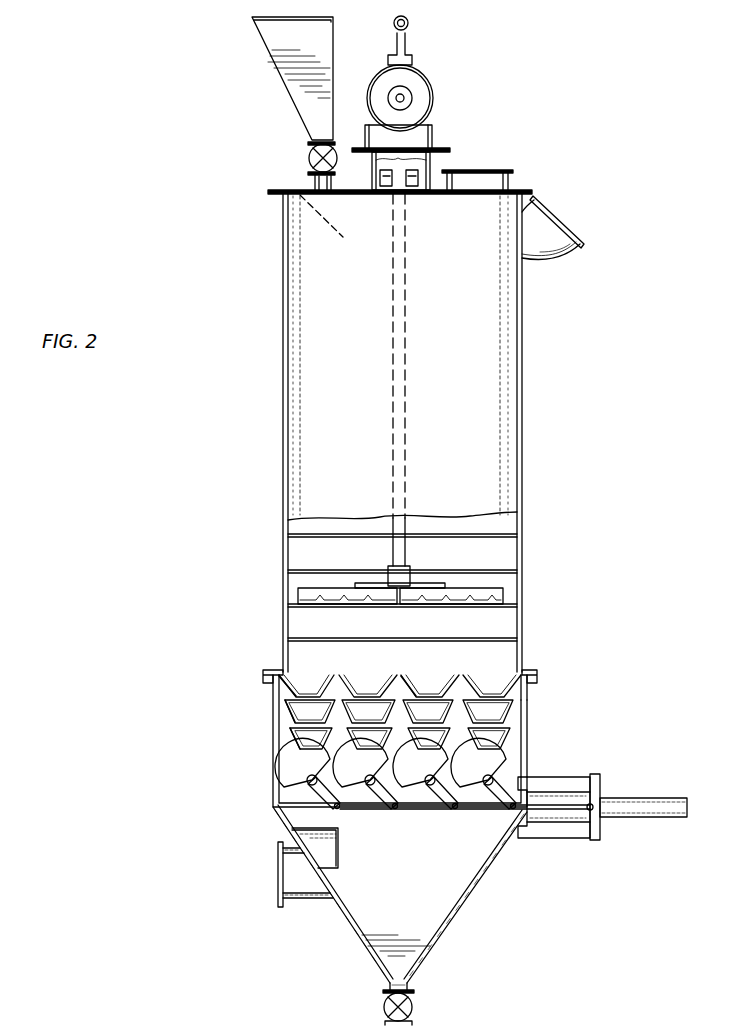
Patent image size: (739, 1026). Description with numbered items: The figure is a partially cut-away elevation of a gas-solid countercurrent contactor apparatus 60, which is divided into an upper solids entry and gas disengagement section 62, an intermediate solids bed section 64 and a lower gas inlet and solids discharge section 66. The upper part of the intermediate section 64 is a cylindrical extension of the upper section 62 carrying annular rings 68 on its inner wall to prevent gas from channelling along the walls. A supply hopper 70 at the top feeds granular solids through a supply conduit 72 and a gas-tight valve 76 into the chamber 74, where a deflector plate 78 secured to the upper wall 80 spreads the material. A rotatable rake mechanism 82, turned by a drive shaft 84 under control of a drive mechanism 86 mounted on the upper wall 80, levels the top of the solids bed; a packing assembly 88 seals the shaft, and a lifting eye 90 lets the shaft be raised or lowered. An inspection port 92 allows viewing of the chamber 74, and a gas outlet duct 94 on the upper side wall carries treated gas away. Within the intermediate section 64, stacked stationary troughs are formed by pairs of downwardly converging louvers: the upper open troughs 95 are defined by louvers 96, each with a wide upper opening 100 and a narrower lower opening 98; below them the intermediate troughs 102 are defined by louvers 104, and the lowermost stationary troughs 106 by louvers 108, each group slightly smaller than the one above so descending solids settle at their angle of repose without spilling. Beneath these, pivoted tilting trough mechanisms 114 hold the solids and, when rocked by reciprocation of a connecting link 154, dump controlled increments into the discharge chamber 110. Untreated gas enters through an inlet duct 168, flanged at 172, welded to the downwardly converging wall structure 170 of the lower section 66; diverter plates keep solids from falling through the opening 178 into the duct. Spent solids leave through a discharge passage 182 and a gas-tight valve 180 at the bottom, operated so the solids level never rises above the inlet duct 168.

The countercurrent contactor apparatus 60 is at (522, 392).
The upper solids entry and gas disengagement section 62 is at (522, 550).
The intermediate solids bed section 64 is at (530, 728).
The lower gas inlet and solids discharge section 66 is at (480, 885).
The annular rings 68 is at (514, 640).
The supply hopper 70 is at (275, 42).
The supply conduit 72 is at (310, 187).
The chamber 74 is at (478, 562).
The gas-tight valve 76 is at (308, 156).
The deflector plate 78 is at (320, 215).
The upper wall 80 is at (440, 189).
The rotatable rake mechanism 82 is at (305, 590).
The drive shaft 84 is at (392, 554).
The drive mechanism 86 is at (425, 75).
The packing assembly 88 is at (412, 176).
The lifting eye 90 is at (410, 22).
The inspection port 92 is at (505, 169).
The gas outlet duct 94 is at (564, 247).
The open troughs 95 is at (276, 688).
The louvers 96 is at (482, 690).
The lower opening 98 is at (505, 700).
The upper opening 100 is at (478, 676).
The intermediate troughs 102 is at (281, 720).
The louvers 104 is at (318, 720).
The lowermost stationary troughs 106 is at (281, 744).
The louvers 108 is at (330, 742).
The discharge chamber 110 is at (418, 919).
The tilting trough mechanisms 114 is at (511, 773).
The connecting link 154 is at (432, 808).
The inlet duct 168 is at (305, 900).
The downwardly converging wall structure 170 is at (356, 938).
The flange 172 is at (280, 848).
The opening 178 is at (333, 893).
The gas-tight valve 180 is at (416, 1008).
The discharge passage 182 is at (390, 985).